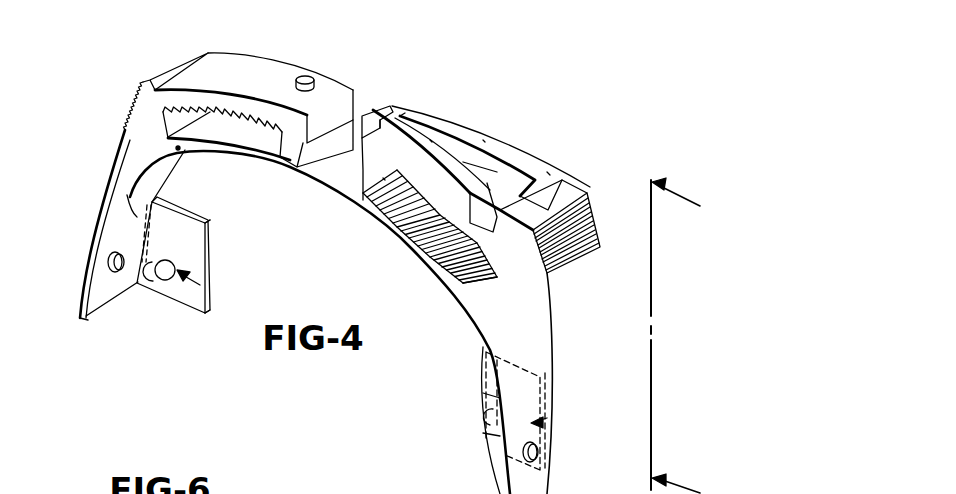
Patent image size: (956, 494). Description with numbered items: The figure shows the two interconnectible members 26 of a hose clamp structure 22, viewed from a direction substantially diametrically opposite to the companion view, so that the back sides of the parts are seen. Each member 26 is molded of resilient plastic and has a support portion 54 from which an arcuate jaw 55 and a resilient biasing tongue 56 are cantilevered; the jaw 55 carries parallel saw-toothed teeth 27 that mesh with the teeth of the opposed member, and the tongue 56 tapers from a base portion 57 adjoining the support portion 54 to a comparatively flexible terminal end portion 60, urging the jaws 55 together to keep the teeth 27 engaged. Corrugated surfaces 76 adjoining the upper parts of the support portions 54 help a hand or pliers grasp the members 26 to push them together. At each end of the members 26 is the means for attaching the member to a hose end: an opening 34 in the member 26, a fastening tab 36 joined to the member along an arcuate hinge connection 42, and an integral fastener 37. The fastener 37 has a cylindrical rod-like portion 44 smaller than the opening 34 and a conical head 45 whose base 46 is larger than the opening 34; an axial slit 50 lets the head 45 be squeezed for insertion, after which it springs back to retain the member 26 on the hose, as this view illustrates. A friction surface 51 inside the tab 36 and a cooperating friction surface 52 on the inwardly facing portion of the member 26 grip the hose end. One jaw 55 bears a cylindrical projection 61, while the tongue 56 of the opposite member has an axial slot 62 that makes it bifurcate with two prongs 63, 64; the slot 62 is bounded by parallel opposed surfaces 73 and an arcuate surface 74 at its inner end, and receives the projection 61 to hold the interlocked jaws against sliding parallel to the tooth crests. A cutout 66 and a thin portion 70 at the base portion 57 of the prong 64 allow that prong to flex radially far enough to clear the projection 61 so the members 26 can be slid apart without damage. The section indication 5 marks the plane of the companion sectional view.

The section line 5- 5 is at (678, 332).
The hose clamp structure 22 is at (377, 82).
The interconnectible member 26 is at (95, 207).
The saw-toothed teeth 27 is at (383, 178).
The opening 34 is at (103, 260).
The fastening tab 36 is at (208, 260).
The fastener 37 is at (207, 313).
The arcuate hinge connection 42 is at (120, 187).
The cylindrical rod-like portion 44 is at (207, 228).
The conical head 45 is at (163, 281).
The base of conical head 46 is at (185, 210).
The axial slit 50 is at (140, 277).
The friction surface 51 is at (200, 285).
The friction surface 52 is at (82, 310).
The support portion 54 is at (153, 128).
The arcuate jaw 55 is at (248, 62).
The resilient biasing tongue 56 is at (257, 157).
The base portion 57 is at (178, 148).
The terminal end portion 60 is at (423, 107).
The cylindrical projection 61 is at (312, 78).
The axial slot 62 is at (430, 140).
The prong 63 is at (483, 142).
The prong 64 is at (405, 147).
The cutout 66 is at (440, 260).
The thin portion 70 is at (457, 288).
The parallel opposed surfaces 73 is at (497, 172).
The arcuate surface 74 is at (547, 172).
The corrugated surfaces 76 is at (132, 107).